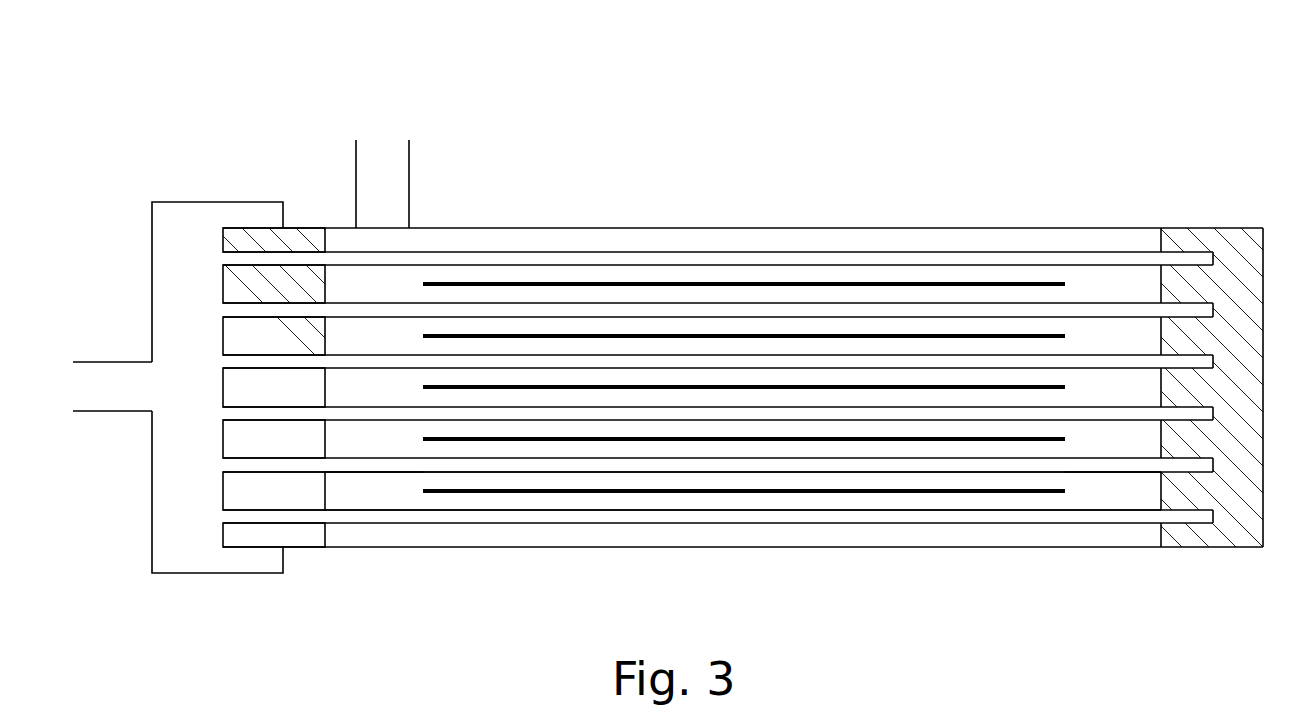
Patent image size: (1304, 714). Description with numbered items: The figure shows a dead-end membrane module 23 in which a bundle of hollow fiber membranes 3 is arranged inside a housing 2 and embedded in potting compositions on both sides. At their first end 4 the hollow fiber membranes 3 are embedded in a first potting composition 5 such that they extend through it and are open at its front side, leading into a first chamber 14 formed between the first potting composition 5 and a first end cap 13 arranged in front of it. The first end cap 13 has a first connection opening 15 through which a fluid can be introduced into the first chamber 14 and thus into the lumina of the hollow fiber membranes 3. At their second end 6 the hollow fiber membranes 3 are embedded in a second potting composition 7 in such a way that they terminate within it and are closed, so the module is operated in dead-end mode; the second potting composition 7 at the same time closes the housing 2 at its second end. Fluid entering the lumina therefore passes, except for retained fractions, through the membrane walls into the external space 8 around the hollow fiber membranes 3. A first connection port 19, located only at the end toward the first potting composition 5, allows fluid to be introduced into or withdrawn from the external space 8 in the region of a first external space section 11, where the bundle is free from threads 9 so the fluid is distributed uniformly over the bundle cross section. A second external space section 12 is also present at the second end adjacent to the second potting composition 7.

The housing 2 is at (922, 228).
The hollow fiber membranes 3 is at (858, 518).
The first end 4 is at (260, 518).
The first potting composition 5 is at (282, 500).
The second end 6 is at (1183, 517).
The second potting composition 7 is at (1252, 518).
The external space 8 is at (707, 502).
The threads 9 is at (488, 493).
The first external space section 11 is at (373, 498).
The second external space section 12 is at (1083, 488).
The first end cap 13 is at (150, 533).
The first chamber 14 is at (185, 552).
The first connection opening 15 is at (112, 412).
The first connection port 19 is at (409, 175).
The membrane module 23 is at (818, 116).